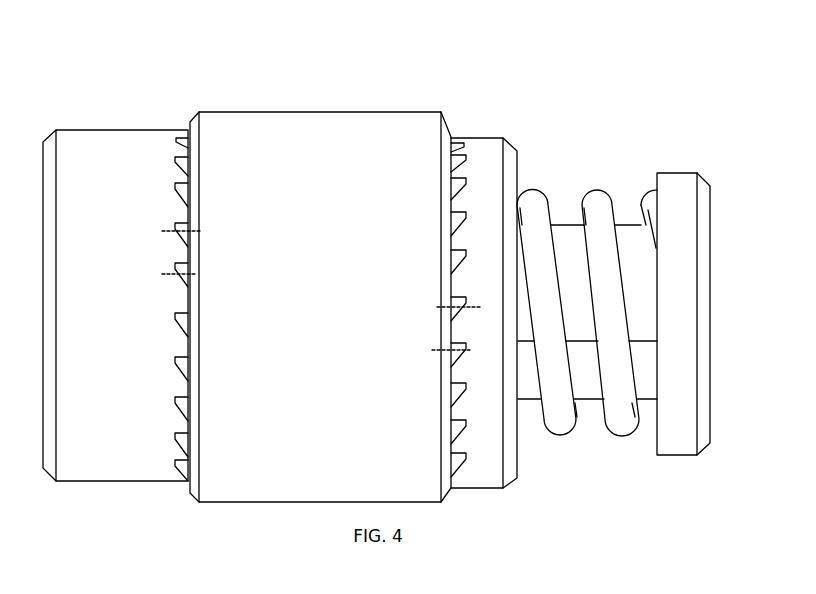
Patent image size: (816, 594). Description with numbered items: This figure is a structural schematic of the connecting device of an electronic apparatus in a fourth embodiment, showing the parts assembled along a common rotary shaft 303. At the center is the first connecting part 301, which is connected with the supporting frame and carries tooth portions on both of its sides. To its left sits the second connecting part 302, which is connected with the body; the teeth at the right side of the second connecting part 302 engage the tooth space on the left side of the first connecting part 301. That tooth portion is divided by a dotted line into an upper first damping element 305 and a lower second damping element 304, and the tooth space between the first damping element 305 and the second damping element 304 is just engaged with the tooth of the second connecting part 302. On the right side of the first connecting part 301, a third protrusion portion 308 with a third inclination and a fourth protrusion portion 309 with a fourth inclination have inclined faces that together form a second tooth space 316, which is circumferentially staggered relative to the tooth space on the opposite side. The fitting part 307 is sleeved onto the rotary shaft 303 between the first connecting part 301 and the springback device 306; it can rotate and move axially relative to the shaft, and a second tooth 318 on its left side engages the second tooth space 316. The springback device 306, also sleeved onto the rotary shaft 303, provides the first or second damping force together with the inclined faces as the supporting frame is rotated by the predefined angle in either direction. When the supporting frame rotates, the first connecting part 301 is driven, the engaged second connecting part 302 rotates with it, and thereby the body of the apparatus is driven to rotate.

The first connecting part 301 is at (307, 157).
The second connecting part 302 is at (95, 148).
The rotary shaft 303 is at (567, 262).
The second damping element 304 is at (180, 237).
The first damping element 305 is at (180, 228).
The springback device 306 is at (605, 270).
The fitting part 307 is at (483, 168).
The third protrusion portion 308 is at (457, 302).
The fourth protrusion portion 309 is at (457, 315).
The second tooth space 316 is at (460, 176).
The second tooth 318 is at (457, 173).